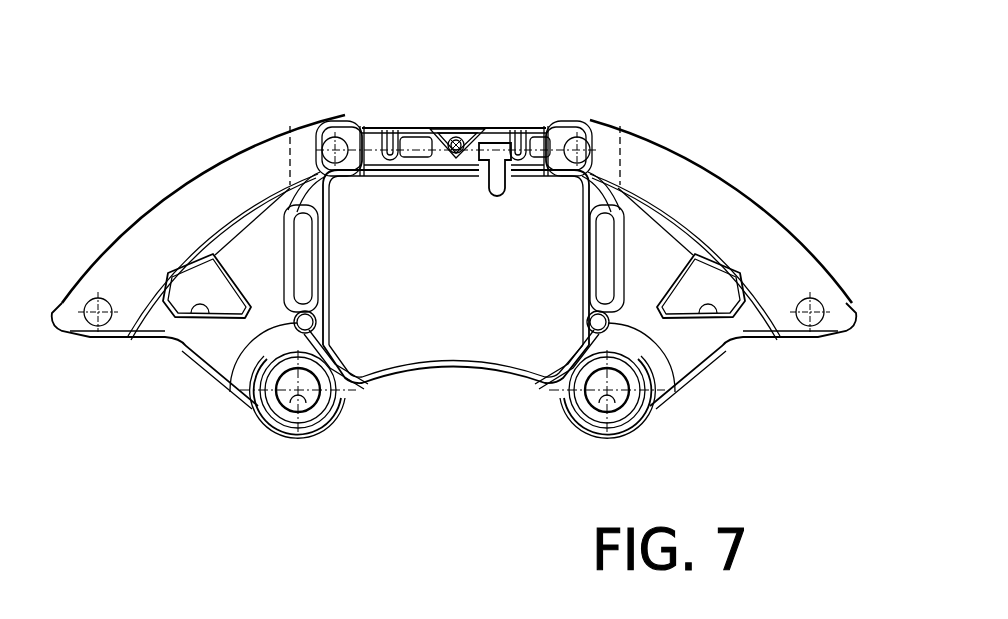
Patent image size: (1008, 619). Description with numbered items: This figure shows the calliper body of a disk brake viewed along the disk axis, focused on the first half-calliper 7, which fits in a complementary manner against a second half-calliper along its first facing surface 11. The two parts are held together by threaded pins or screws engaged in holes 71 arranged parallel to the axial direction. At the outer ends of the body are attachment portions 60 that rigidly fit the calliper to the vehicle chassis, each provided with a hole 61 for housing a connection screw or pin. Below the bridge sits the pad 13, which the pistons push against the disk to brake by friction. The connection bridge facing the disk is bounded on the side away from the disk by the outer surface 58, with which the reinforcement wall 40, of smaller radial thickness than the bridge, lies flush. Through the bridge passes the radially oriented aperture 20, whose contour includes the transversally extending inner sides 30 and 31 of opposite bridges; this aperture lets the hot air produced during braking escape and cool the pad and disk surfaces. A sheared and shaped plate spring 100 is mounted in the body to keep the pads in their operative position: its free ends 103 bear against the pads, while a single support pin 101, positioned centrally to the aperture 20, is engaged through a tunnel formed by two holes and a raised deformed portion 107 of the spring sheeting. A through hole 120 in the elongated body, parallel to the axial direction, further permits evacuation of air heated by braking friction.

The first half-calliper 7 is at (204, 153).
The first facing surface 11 is at (454, 253).
The pad 13 is at (480, 337).
The aperture 20 is at (454, 89).
The inner side of bridge 30 is at (292, 125).
The inner side of bridge 31 is at (622, 124).
The reinforcement wall 40 is at (359, 122).
The outer surface 58 is at (683, 150).
The attachment portion 60 is at (472, 416).
The hole 61 is at (302, 402).
The hole 71 is at (97, 298).
The spring 100 is at (465, 116).
The support pin 101 is at (455, 154).
The free end 103 is at (392, 130).
The raised deformed portion 107 is at (456, 134).
The through hole 120 is at (200, 303).